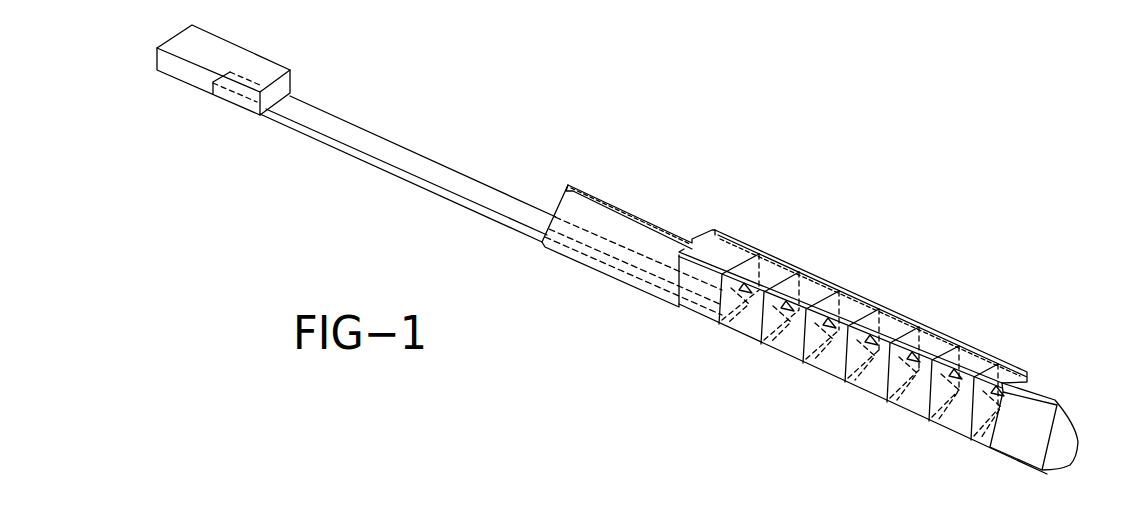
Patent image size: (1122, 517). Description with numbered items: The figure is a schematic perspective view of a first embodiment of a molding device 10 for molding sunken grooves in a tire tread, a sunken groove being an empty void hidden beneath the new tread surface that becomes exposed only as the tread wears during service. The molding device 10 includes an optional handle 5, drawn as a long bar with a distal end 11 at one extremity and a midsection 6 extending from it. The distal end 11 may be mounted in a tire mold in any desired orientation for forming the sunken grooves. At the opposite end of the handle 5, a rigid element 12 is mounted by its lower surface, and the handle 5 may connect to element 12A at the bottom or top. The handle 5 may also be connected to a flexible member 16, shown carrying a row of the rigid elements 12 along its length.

The molding device 10 is at (918, 163).
The distal end 11 is at (232, 58).
The handle 5 is at (413, 158).
The midsection 6 is at (473, 190).
The element 12A is at (618, 236).
The rigid element 12 is at (745, 325).
The flexible member 16 is at (898, 325).